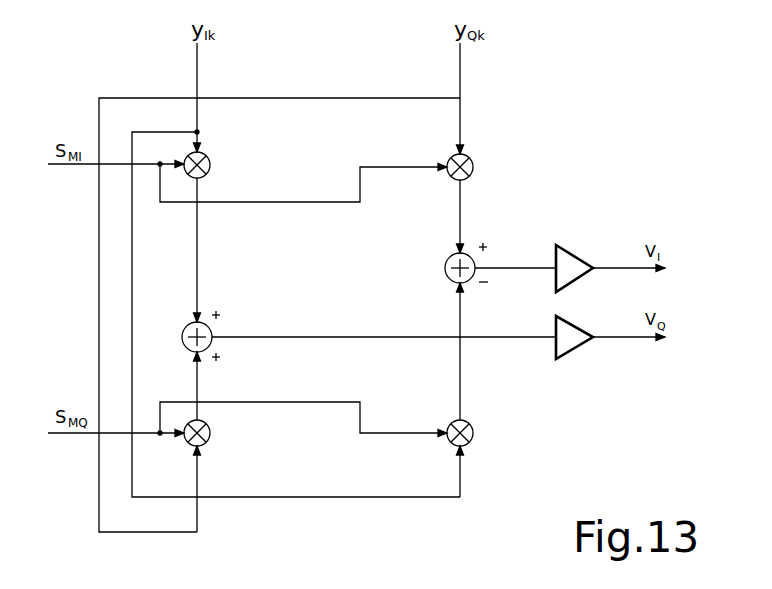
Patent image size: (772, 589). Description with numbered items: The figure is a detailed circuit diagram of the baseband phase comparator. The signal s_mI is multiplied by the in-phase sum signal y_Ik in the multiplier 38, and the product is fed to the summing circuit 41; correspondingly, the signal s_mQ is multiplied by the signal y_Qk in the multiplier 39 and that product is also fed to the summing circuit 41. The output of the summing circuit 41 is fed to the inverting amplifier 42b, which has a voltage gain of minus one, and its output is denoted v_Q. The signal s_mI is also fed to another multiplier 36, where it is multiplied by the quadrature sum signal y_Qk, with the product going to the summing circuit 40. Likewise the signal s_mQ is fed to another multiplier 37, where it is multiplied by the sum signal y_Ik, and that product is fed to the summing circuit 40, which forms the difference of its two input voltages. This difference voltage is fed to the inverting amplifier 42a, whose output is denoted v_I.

The multiplier 36 is at (473, 168).
The multiplier 37 is at (473, 433).
The multiplier 38 is at (210, 166).
The multiplier 39 is at (210, 433).
The summing circuit 40 is at (471, 256).
The summing circuit 41 is at (207, 324).
The inverting amplifier 42a is at (576, 247).
The inverting amplifier 42b is at (577, 358).